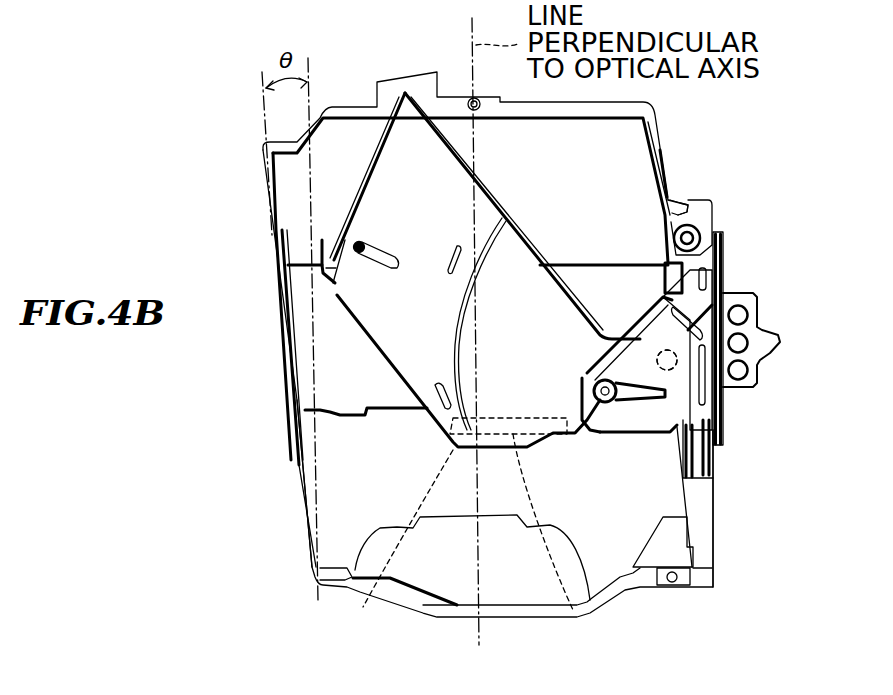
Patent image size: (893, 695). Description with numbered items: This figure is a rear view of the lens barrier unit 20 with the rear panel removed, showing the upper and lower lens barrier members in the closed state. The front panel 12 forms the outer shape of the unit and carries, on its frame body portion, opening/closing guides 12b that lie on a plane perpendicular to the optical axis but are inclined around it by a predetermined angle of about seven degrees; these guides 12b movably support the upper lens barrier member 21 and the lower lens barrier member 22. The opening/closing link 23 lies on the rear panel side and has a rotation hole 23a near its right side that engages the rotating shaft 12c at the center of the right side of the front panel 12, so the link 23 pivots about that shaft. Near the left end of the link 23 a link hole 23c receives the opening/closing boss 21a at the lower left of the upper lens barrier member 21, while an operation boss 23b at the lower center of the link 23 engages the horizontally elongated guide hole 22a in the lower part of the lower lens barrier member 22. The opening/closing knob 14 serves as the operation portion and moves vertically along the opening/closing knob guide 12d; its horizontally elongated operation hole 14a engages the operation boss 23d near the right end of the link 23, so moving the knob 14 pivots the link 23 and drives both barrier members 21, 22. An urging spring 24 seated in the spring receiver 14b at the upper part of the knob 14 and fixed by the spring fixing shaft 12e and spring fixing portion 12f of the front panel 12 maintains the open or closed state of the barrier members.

The lens barrier unit 20 is at (213, 107).
The front panel 12 is at (327, 107).
The opening/closing guides 12b is at (310, 487).
The rotating shaft 12c is at (677, 373).
The opening/closing knob guide 12d is at (700, 453).
The spring fixing shaft 12e is at (688, 228).
The spring fixing portion 12f is at (680, 200).
The opening/closing knob 14 is at (757, 337).
The operation hole 14a is at (650, 382).
The spring receiver 14b is at (707, 307).
The upper lens barrier member 21 is at (582, 170).
The opening/closing boss 21a is at (360, 253).
The lower lens barrier member 22 is at (323, 392).
The guide hole 22a is at (573, 610).
The opening/closing link 23 is at (365, 312).
The rotation hole 23a is at (667, 360).
The operation boss 23b is at (365, 607).
The link hole 23c is at (362, 258).
The operation boss 23d is at (603, 398).
The urging spring 24 is at (700, 236).